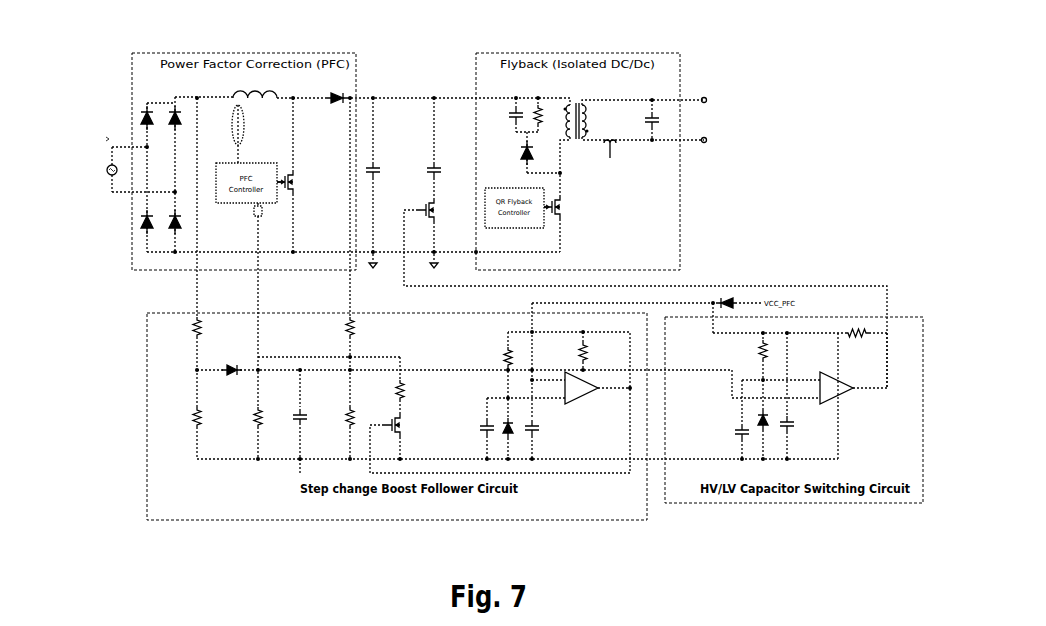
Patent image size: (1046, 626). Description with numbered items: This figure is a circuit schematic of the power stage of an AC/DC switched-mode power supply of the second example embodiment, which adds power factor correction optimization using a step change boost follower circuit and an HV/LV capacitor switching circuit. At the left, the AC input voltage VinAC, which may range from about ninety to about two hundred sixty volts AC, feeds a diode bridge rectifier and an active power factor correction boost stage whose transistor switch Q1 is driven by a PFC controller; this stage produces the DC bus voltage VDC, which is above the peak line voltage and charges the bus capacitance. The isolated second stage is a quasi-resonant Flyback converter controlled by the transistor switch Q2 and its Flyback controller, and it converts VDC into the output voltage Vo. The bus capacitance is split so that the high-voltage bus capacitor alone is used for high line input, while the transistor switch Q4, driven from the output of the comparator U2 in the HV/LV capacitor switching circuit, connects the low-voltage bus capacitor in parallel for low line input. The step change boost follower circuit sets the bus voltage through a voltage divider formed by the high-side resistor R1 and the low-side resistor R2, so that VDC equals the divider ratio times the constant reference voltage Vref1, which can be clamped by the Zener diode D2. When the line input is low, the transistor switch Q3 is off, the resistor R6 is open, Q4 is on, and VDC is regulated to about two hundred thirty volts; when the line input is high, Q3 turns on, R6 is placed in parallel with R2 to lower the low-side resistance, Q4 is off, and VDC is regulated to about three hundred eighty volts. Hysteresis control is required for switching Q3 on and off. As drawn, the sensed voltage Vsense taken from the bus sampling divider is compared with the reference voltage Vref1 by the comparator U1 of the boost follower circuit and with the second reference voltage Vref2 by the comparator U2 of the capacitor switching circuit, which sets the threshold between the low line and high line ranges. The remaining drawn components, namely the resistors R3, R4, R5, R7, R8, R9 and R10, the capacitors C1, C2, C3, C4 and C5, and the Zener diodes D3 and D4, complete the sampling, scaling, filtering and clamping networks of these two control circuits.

The AC input voltage VinAC is at (89, 182).
The transistor switch Q1 is at (301, 175).
The transistor switch Q2 is at (569, 223).
The transistor switch Q3 is at (404, 425).
The transistor switch Q4 is at (645, 292).
The DC bus voltage VDC is at (399, 80).
The output voltage Vo is at (731, 120).
The sense voltage Vsense is at (513, 384).
The reference voltage Vref1 is at (544, 410).
The second reference voltage Vref2 is at (806, 367).
The high-side resistor R1 is at (363, 327).
The low-side resistor R2 is at (336, 417).
The resistor R3 is at (213, 327).
The resistor R4 is at (209, 417).
The resistor R5 is at (250, 417).
The resistor R6 is at (384, 390).
The resistor R7 is at (496, 357).
The resistor R8 is at (599, 355).
The resistor R9 is at (750, 354).
The resistor R10 is at (858, 348).
The capacitor C1 is at (290, 418).
The capacitor C2 is at (473, 427).
The capacitor C3 is at (547, 430).
The capacitor C4 is at (726, 431).
The capacitor C5 is at (800, 432).
The zener diode D4 is at (232, 365).
The Zener diode D2 is at (504, 420).
The zener diode BZX85-6V8 D3 is at (756, 420).
The comparator LM393 U1 is at (581, 388).
The comparator U2 is at (836, 388).